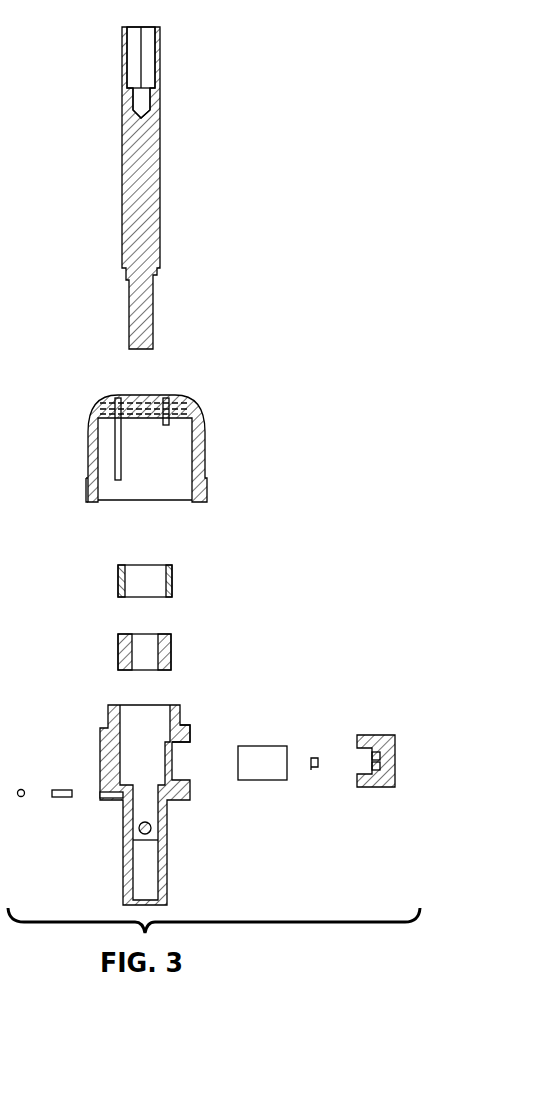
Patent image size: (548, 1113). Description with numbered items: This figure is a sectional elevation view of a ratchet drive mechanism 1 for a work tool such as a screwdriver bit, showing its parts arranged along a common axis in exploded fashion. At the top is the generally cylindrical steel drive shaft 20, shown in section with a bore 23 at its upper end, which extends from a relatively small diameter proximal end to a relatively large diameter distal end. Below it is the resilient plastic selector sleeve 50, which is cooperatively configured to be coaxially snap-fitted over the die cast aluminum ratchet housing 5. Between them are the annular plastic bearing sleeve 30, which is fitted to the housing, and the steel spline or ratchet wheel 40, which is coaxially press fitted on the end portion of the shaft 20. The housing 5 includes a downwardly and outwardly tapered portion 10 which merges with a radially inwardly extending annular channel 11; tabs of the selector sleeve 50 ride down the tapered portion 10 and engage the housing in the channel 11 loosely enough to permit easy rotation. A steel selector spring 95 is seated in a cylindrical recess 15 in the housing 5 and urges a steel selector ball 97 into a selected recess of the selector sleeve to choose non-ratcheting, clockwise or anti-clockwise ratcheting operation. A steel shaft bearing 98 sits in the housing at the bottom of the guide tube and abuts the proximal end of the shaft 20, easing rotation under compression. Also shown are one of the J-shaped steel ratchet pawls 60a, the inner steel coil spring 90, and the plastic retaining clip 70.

The ratchet drive mechanism 1 is at (220, 170).
The ratchet housing 5 is at (133, 791).
The tapered portion 10 is at (178, 708).
The annular channel 11 is at (186, 735).
The cylindrical recess 15 is at (100, 795).
The drive shaft 20 is at (121, 182).
The bore 23 is at (140, 38).
The bearing sleeve 30 is at (172, 575).
The ratchet wheel 40 is at (172, 648).
The selector sleeve 50 is at (92, 408).
The ratchet pawl 60a is at (260, 780).
The retaining clip 70 is at (380, 788).
The inner coil spring 90 is at (311, 770).
The selector spring 95 is at (65, 800).
The selector ball 97 is at (23, 797).
The shaft bearing 98 is at (150, 832).